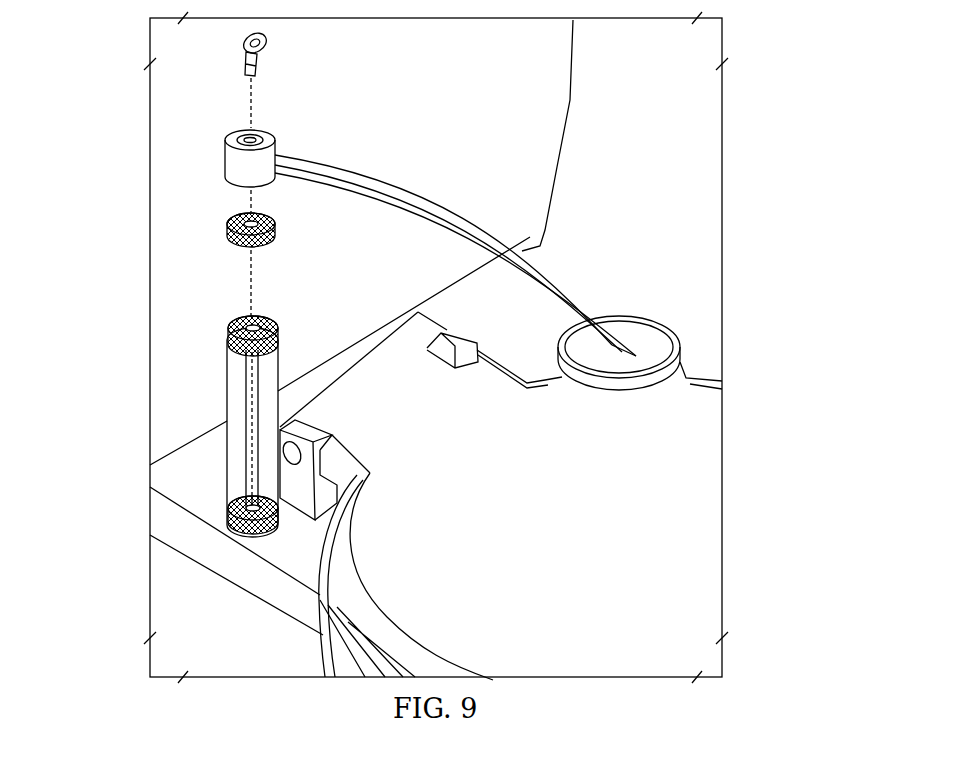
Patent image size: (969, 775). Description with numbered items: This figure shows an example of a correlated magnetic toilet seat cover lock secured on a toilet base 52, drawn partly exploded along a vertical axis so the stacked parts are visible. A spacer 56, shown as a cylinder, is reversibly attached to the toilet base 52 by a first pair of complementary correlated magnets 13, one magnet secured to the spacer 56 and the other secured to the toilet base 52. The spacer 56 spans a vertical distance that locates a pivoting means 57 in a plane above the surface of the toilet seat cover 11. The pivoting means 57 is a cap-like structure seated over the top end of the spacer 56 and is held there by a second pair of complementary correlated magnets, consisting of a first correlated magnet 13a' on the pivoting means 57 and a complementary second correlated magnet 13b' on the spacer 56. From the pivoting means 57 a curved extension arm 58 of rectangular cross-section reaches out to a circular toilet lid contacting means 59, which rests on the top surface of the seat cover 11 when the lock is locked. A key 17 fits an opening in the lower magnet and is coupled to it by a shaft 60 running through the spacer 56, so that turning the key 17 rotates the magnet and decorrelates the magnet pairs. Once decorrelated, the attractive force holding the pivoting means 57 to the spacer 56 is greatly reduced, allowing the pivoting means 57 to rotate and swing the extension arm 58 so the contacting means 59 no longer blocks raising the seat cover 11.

The toilet seat cover 11 is at (643, 502).
The first pair of complementary correlated magnets 13 is at (226, 524).
The first correlated magnet 13a' is at (151, 268).
The second correlated magnet 13b' is at (157, 357).
The key 17 is at (240, 52).
The toilet base 52 is at (259, 598).
The spacer 56 is at (228, 393).
The pivoting means 57 is at (228, 163).
The extension arm 58 is at (497, 236).
The toilet lid contacting means 59 is at (655, 351).
The shaft 60 is at (247, 448).